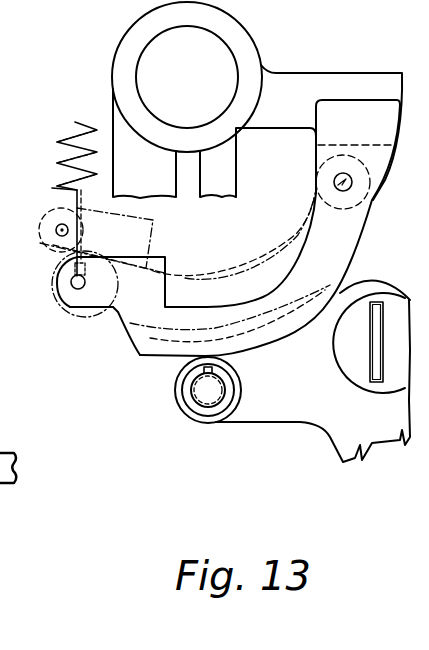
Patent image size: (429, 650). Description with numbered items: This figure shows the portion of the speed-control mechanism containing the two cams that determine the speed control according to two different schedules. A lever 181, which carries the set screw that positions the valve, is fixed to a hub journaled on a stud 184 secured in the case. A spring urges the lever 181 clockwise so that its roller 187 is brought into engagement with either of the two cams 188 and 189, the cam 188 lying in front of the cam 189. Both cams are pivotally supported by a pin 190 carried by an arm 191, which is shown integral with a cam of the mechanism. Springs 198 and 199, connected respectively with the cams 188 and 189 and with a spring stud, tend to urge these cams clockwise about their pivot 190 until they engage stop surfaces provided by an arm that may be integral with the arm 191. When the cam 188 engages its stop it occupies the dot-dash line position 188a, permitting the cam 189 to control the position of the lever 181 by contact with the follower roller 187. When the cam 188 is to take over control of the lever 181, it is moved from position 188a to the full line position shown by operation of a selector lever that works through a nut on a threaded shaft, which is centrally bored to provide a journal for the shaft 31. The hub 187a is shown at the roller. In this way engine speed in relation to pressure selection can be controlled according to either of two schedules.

The shaft 31 is at (223, 56).
The arm 191 is at (364, 73).
The pin 190 is at (352, 183).
The stud 184 is at (386, 291).
The lever 181 is at (262, 423).
The roller 187 is at (191, 421).
The shaft 187a is at (203, 389).
The cam 188 is at (153, 222).
The dot-dash line position 188a is at (128, 316).
The cam 189 is at (148, 343).
The spring 198 is at (55, 188).
The spring 199 is at (62, 157).